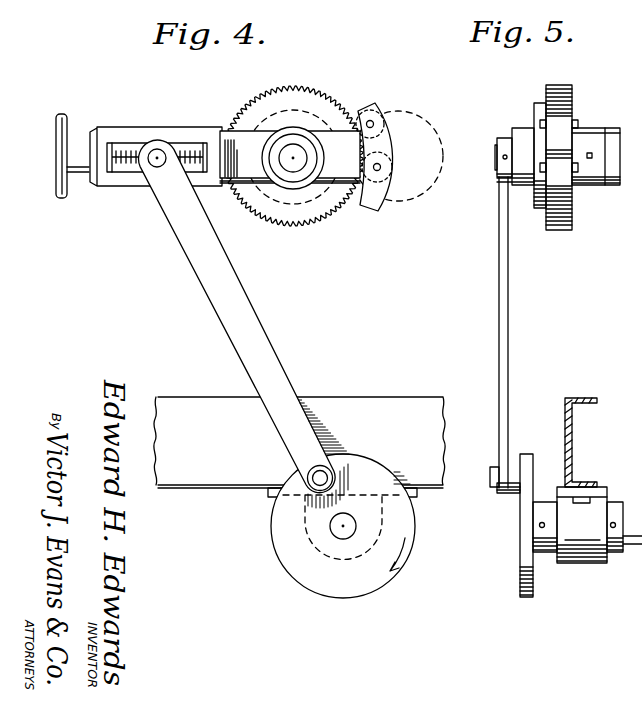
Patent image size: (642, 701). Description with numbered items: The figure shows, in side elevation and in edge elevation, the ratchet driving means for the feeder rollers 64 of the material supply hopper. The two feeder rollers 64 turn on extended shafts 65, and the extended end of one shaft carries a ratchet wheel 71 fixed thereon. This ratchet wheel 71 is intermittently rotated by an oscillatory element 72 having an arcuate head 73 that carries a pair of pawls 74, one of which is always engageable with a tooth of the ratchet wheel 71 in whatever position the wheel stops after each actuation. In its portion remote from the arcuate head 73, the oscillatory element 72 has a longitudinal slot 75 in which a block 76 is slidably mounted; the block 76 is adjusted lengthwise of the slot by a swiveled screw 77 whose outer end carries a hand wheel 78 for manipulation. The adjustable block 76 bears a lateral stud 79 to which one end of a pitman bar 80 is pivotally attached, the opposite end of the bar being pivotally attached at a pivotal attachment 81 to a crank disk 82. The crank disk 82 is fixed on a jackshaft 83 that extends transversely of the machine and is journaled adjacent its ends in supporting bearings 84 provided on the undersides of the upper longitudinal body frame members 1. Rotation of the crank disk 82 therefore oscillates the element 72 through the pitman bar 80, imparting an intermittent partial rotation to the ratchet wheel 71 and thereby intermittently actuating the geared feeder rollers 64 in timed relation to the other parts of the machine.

In FIG. 4, the upper longitudinal body frame members 1 is at (393, 397).
In FIG. 5, the upper longitudinal body frame members 1 is at (565, 401).
In FIG. 4, the feeder rollers 64 is at (281, 83).
In FIG. 4, the extended shafts 65 is at (293, 163).
In FIG. 4, the ratchet wheel 71 is at (312, 94).
In FIG. 5, the ratchet wheel 71 is at (560, 86).
In FIG. 4, the oscillatory element 72 is at (242, 143).
In FIG. 5, the oscillatory element 72 is at (519, 134).
In FIG. 4, the arcuate head 73 is at (389, 143).
In FIG. 5, the arcuate head 73 is at (536, 196).
In FIG. 4, the pawls 74 is at (386, 137).
In FIG. 5, the pawls 74 is at (565, 180).
In FIG. 4, the longitudinal slot 75 is at (192, 146).
In FIG. 4, the block 76 is at (143, 143).
In FIG. 4, the swiveled screw 77 is at (123, 172).
In FIG. 4, the hand wheel 78 is at (57, 133).
In FIG. 4, the lateral stud 79 is at (158, 167).
In FIG. 4, the pitman bar 80 is at (231, 333).
In FIG. 5, the pitman bar 80 is at (510, 285).
In FIG. 4, the pivotal attachment 81 is at (312, 470).
In FIG. 5, the pivotal attachment 81 is at (496, 488).
In FIG. 4, the crank disk 82 is at (380, 464).
In FIG. 5, the crank disk 82 is at (525, 536).
In FIG. 4, the jackshaft 83 is at (340, 536).
In FIG. 5, the jackshaft 83 is at (635, 520).
In FIG. 4, the supporting bearings 84 is at (268, 490).
In FIG. 5, the supporting bearings 84 is at (578, 563).